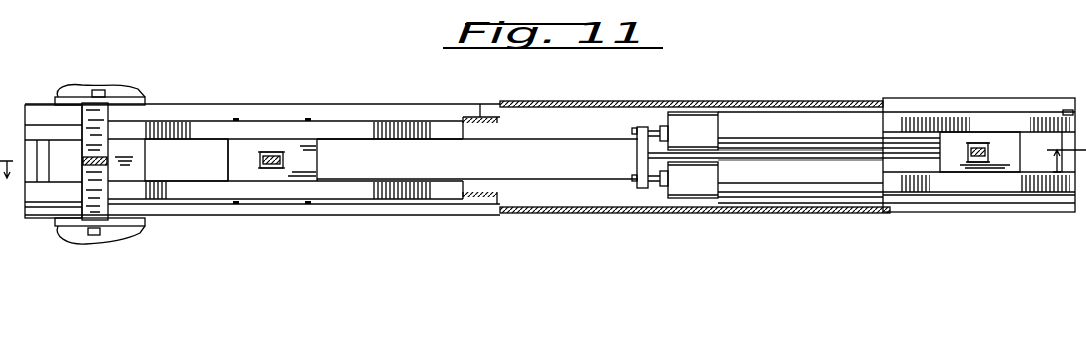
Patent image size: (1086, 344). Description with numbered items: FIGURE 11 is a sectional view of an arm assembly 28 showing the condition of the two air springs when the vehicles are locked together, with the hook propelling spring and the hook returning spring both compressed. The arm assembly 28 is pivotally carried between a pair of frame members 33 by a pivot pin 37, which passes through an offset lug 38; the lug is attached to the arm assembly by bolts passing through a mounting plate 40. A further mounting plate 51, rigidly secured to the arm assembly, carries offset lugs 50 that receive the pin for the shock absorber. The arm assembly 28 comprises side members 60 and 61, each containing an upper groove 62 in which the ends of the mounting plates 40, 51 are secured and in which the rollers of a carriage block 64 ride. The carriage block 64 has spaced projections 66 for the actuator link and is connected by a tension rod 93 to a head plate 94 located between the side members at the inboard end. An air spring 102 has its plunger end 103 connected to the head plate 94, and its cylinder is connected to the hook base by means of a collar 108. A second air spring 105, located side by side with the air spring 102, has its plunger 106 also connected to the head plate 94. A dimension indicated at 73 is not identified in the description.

The arm assembly 28 is at (243, 101).
The frame members 33 is at (69, 82).
The pivot pin 37 is at (100, 95).
The offset lug 38 is at (105, 118).
The mounting plate 40 is at (135, 168).
The offset lugs 50 is at (263, 151).
The mounting plate 51 is at (298, 138).
The side member 60 is at (378, 104).
The side member 61 is at (390, 216).
The upper groove 62 is at (479, 122).
The carriage block 64 is at (1002, 147).
The spaced projections 66 is at (975, 142).
The dimension 73 is at (543, 176).
The tension rod 93 is at (792, 152).
The head plate 94 is at (641, 127).
The air spring 102 is at (800, 133).
The plunger end 103 is at (657, 128).
The second air spring 105 is at (800, 169).
The plunger 106 is at (657, 188).
The collar 108 is at (727, 113).